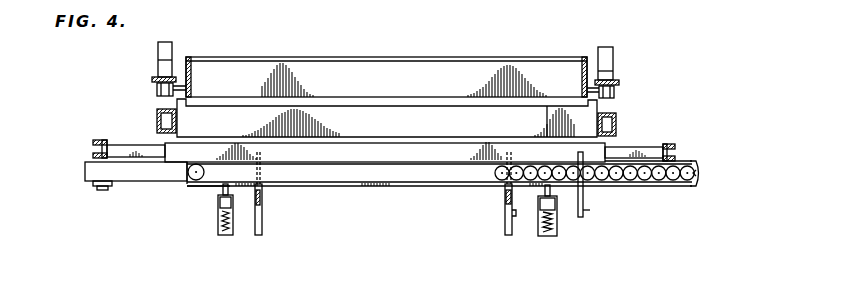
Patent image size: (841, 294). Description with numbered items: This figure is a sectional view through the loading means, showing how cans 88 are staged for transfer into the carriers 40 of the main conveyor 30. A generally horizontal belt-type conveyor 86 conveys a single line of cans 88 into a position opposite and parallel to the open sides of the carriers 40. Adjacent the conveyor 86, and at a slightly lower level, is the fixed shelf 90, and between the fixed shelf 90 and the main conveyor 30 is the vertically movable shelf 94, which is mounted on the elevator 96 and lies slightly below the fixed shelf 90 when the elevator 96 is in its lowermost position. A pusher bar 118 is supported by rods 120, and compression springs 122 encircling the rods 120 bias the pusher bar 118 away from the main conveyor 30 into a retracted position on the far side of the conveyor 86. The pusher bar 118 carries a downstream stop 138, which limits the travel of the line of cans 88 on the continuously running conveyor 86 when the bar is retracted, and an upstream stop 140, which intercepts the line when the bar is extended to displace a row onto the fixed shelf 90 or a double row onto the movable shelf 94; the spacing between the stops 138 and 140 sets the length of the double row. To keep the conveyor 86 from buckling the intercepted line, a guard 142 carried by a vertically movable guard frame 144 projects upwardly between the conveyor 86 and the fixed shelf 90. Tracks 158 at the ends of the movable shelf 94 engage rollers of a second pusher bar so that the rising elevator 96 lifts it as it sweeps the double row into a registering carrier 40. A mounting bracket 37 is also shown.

The main conveyor 30 is at (625, 95).
The mounting bracket 37 is at (157, 90).
The carrier 40 is at (268, 68).
The horizontal conveyor 86 is at (152, 173).
The cans 88 is at (632, 178).
The fixed shelf 90 is at (347, 151).
The movable shelf 94 is at (587, 125).
The elevator 96 is at (619, 133).
The pusher bar 118 is at (420, 182).
The rods 120 is at (228, 222).
The compression springs 122 is at (232, 221).
The downstream stop 138 is at (183, 172).
The upstream stop 140 is at (583, 210).
The guard 142 is at (396, 160).
The guard frame 144 is at (506, 200).
The tracks 158 is at (176, 103).